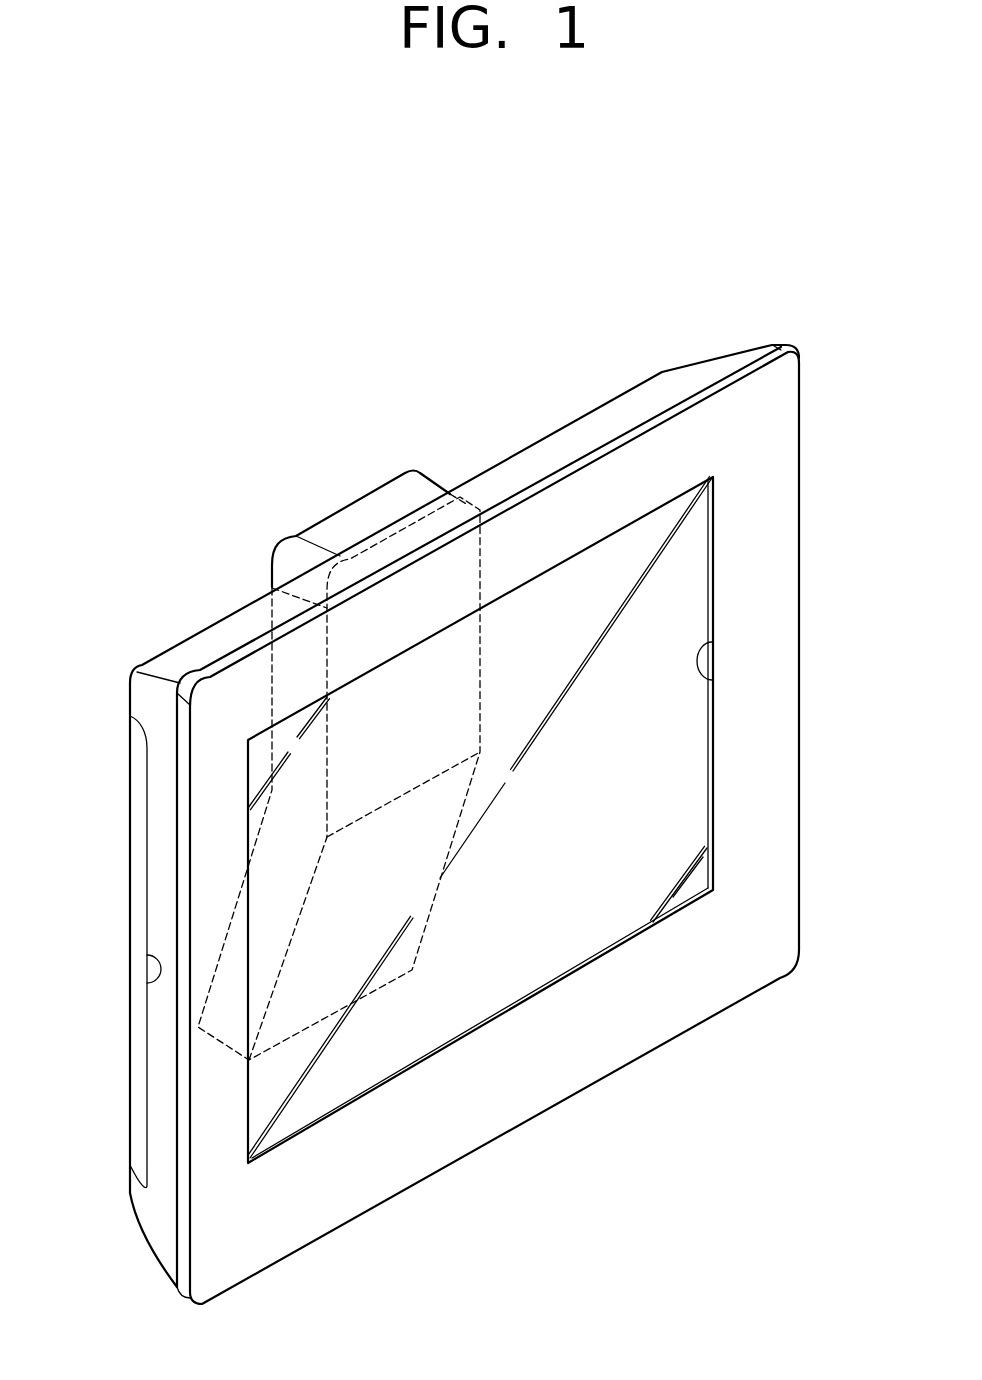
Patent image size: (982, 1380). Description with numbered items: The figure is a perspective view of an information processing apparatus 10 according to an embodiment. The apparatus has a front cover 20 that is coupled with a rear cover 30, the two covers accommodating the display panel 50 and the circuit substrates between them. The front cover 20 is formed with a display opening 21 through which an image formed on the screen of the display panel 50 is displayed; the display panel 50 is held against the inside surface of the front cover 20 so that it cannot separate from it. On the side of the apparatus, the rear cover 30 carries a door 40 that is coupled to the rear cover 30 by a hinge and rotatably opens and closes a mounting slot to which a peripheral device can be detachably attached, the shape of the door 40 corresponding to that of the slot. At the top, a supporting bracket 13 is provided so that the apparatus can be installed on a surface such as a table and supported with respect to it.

The information processing apparatus 10 is at (173, 369).
The supporting bracket 13 is at (347, 505).
The front cover 20 is at (567, 467).
The display opening 21 is at (712, 680).
The rear cover 30 is at (218, 631).
The door 40 is at (132, 792).
The display panel 50 is at (688, 598).